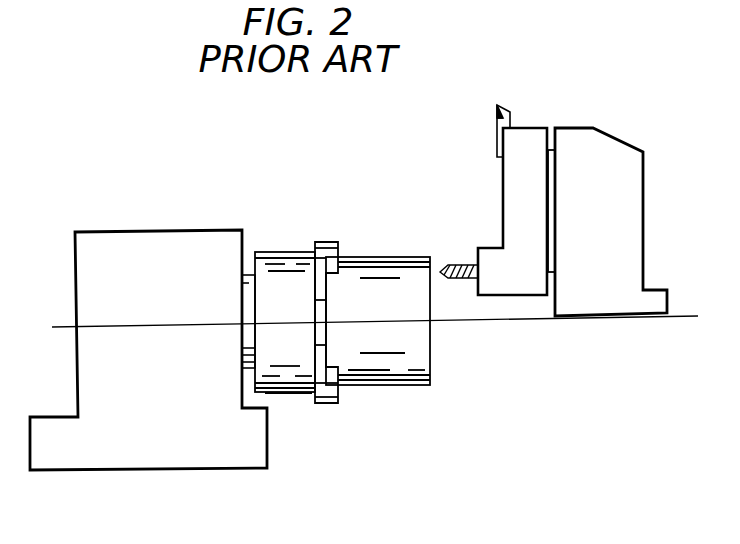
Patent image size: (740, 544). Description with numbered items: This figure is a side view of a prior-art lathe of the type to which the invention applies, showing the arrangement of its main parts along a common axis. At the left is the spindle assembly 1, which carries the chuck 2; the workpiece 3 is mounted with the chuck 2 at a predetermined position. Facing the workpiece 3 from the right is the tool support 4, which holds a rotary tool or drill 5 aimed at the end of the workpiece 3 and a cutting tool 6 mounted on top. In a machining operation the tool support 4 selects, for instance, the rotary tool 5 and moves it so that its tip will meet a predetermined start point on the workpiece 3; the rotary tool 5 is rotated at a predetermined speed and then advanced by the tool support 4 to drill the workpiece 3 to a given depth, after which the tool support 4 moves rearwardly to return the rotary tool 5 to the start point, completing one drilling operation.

The spindle assembly 1 is at (165, 230).
The chuck 2 is at (283, 252).
The workpiece 3 is at (380, 257).
The tool support 4 is at (643, 225).
The rotary tool 5 is at (461, 280).
The cutting tool 6 is at (505, 108).